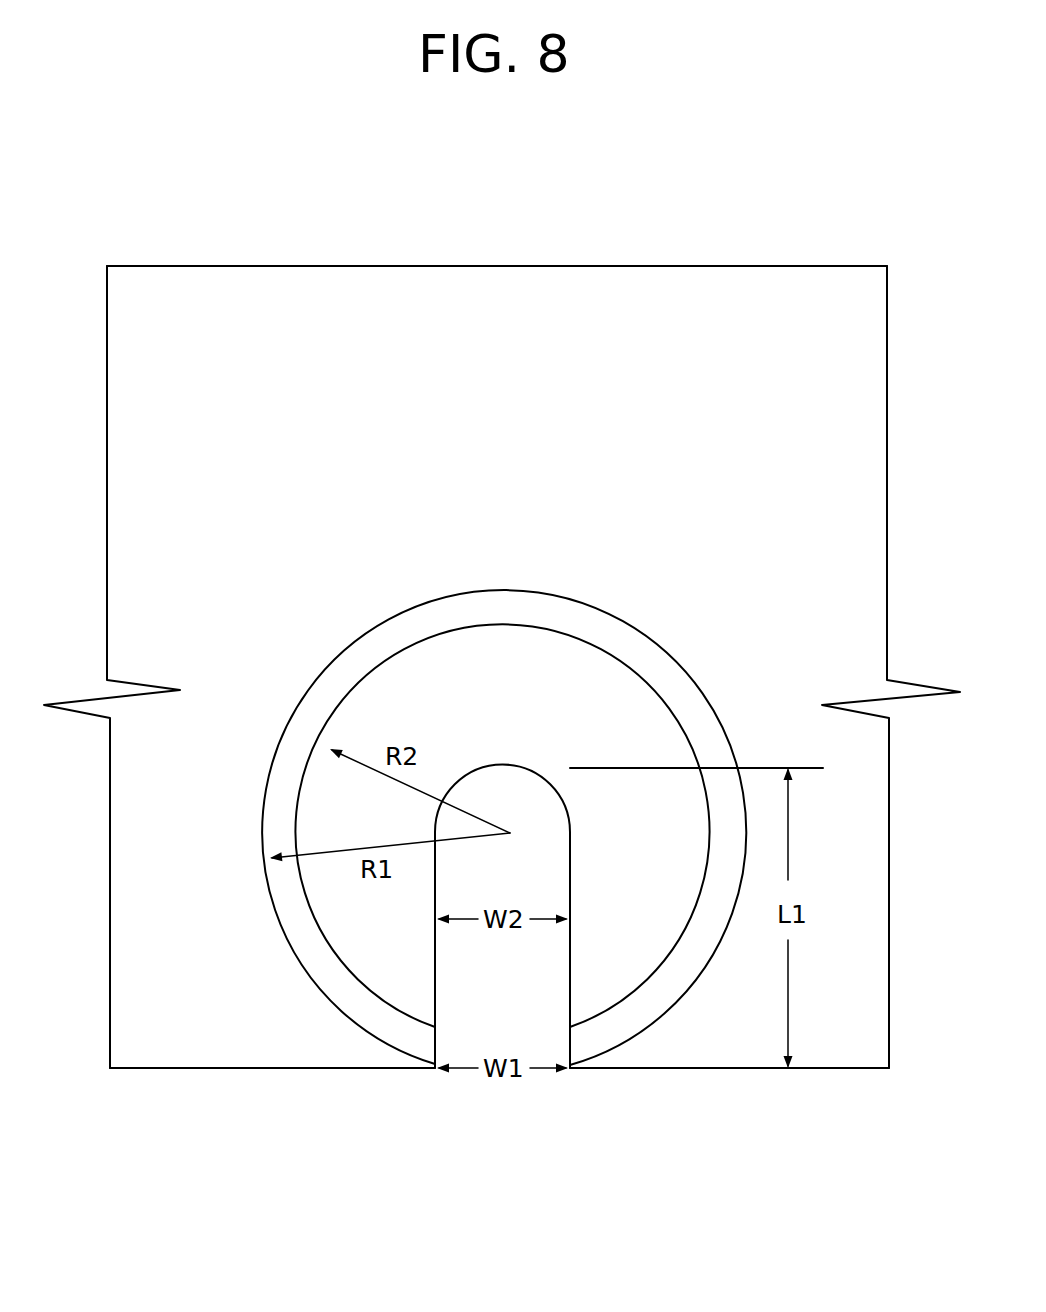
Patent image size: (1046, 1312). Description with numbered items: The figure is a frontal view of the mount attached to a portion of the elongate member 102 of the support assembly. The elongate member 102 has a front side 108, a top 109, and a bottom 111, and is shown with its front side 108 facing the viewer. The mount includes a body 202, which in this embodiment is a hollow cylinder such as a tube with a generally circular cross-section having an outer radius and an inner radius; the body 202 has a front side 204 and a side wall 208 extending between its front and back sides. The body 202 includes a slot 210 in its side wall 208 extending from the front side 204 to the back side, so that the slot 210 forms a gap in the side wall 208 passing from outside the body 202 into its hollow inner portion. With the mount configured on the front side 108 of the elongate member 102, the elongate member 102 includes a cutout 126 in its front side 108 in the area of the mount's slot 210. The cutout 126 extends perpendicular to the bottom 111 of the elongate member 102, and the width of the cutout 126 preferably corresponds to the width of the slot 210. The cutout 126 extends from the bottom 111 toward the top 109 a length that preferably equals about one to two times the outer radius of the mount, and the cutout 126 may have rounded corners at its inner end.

The elongate member 102 is at (750, 250).
The front side 108 is at (510, 348).
The top 109 is at (268, 266).
The bottom 111 is at (281, 1069).
The cutout 126 is at (505, 945).
The body 202 is at (494, 788).
The front side 204 is at (325, 710).
The side wall 208 is at (348, 650).
The slot 210 is at (505, 1102).